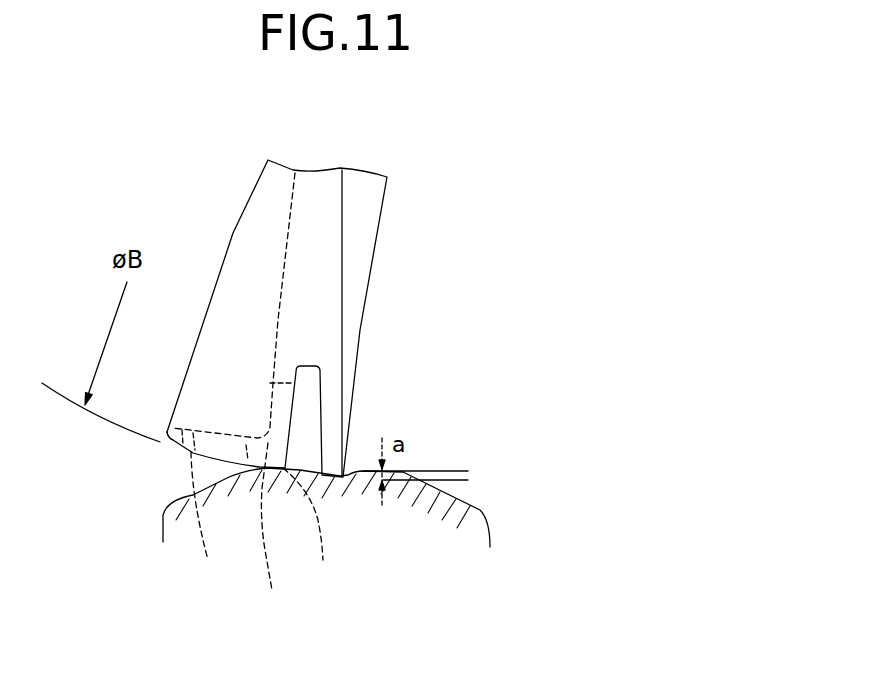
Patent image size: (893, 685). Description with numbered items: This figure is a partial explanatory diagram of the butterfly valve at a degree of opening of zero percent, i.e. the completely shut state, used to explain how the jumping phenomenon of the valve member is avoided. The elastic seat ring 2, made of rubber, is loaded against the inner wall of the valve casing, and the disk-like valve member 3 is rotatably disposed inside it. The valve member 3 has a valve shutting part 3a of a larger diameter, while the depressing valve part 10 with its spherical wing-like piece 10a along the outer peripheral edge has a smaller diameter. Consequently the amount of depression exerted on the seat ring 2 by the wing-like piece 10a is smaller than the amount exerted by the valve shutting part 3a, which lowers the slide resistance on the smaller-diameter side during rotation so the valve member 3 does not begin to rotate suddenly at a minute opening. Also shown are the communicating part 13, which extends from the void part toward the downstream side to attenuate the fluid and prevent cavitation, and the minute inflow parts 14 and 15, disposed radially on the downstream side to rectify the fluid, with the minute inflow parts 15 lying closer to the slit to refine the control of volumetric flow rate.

The elastic seat ring 2 is at (463, 497).
The valve member 3 is at (327, 183).
The valve shutting part 3a is at (330, 418).
The depressing valve part 10 is at (315, 537).
The wing-like piece 10a is at (173, 447).
The communicating part 13 is at (295, 367).
The minute inflow part 14 is at (211, 528).
The minute inflow part 15 is at (278, 538).